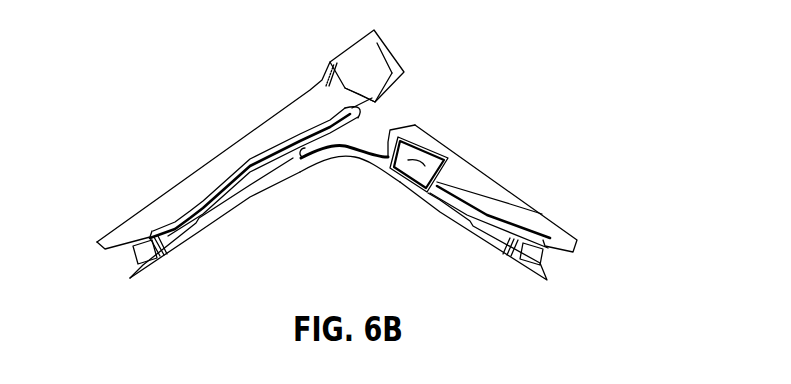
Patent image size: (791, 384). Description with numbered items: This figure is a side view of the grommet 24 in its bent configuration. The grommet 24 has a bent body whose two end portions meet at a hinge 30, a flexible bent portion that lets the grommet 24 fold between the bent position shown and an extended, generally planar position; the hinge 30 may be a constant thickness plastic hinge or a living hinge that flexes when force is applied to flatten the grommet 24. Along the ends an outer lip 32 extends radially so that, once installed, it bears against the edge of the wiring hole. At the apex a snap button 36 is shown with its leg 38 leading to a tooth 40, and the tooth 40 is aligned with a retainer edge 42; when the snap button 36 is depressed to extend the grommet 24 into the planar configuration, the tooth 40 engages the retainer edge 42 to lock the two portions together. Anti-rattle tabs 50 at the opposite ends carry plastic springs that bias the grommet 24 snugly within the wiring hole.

The grommet 24 is at (548, 145).
The hinge 30 is at (340, 160).
The outer lip 32 is at (133, 280).
The snap button 36 is at (360, 42).
The leg 38 is at (382, 53).
The tooth 40 is at (387, 92).
The retainer edge 42 is at (404, 164).
The anti-rattle tab 50 is at (140, 252).